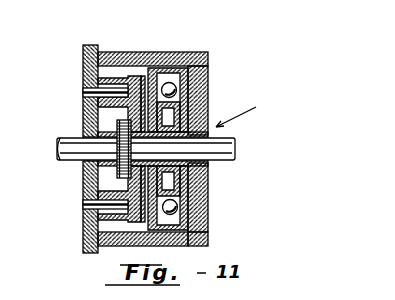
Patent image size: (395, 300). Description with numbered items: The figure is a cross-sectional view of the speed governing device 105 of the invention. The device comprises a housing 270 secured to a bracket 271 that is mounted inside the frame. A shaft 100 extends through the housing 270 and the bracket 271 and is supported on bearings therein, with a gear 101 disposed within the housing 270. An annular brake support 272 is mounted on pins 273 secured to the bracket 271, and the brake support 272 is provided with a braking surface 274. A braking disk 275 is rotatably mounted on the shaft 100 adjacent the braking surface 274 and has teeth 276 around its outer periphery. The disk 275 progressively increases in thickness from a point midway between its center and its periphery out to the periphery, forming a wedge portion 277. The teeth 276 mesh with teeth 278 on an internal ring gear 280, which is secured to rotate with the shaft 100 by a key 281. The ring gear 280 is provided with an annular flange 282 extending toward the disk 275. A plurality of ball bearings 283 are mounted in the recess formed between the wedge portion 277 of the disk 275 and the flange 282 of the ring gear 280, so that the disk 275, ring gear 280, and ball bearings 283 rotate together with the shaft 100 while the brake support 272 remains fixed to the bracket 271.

The shaft 100 is at (61, 133).
The gear 101 is at (122, 178).
The speed governing device 105 is at (250, 109).
The housing 270 is at (117, 58).
The bracket 271 is at (89, 44).
The annular brake support 272 is at (84, 80).
The pins 273 is at (83, 93).
The braking surface 274 is at (151, 77).
The braking disk 275 is at (206, 52).
The teeth 276 is at (134, 243).
The wedge portion 277 is at (209, 192).
The teeth 278 is at (180, 243).
The internal ring gear 280 is at (209, 170).
The key 281 is at (209, 110).
The annular flange 282 is at (200, 100).
The ball bearings 283 is at (209, 69).